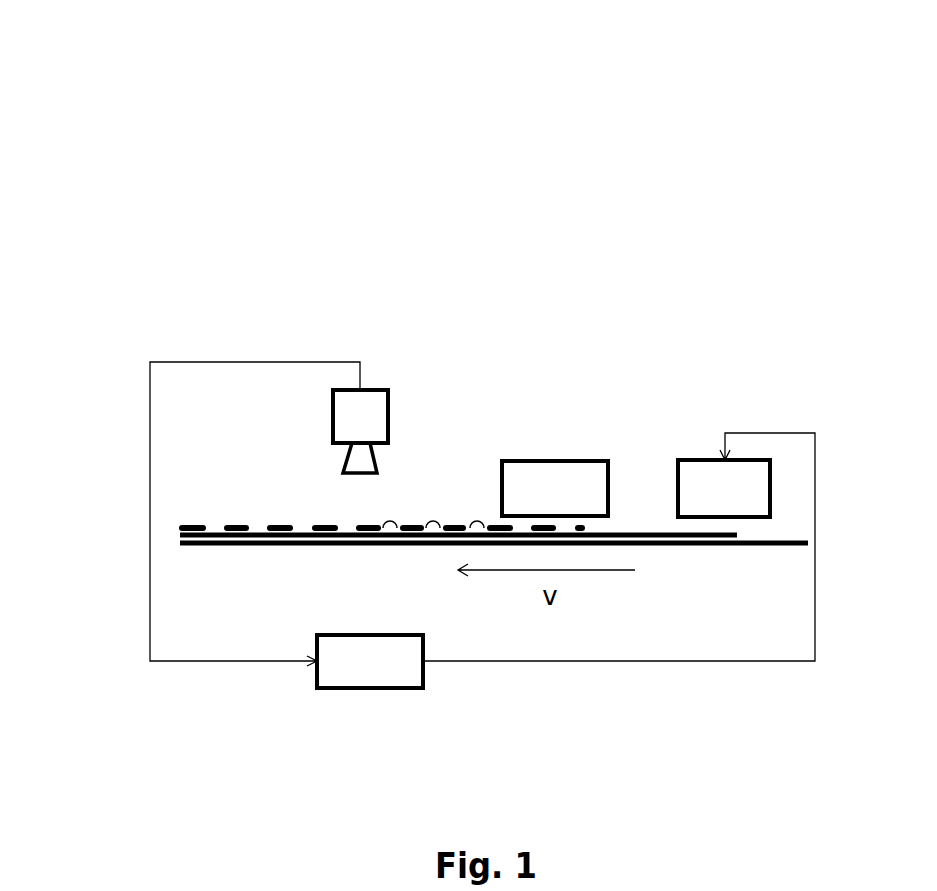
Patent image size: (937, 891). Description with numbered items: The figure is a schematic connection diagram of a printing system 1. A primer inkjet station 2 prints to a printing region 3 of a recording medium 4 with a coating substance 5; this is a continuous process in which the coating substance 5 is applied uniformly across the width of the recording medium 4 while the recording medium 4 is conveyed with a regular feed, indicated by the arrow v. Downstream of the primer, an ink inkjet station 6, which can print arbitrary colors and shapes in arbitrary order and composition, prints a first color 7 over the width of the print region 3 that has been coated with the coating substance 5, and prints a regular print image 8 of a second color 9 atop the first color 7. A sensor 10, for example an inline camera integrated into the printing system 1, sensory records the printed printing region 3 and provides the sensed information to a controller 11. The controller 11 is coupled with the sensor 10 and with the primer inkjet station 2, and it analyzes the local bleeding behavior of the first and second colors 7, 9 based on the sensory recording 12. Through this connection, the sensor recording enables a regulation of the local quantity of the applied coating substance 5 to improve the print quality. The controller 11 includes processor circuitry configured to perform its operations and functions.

The printing system 1 is at (608, 162).
The primer inkjet station 2 is at (710, 473).
The printing region 3 is at (626, 488).
The recording medium 4 is at (760, 543).
The coating substance 5 is at (635, 532).
The ink inkjet station 6 is at (555, 473).
The first color 7 is at (390, 525).
The regular print image 8 is at (155, 536).
The second color 9 is at (190, 523).
The sensor 10 is at (375, 410).
The controller 11 is at (355, 662).
The sensory recording 12 is at (210, 362).